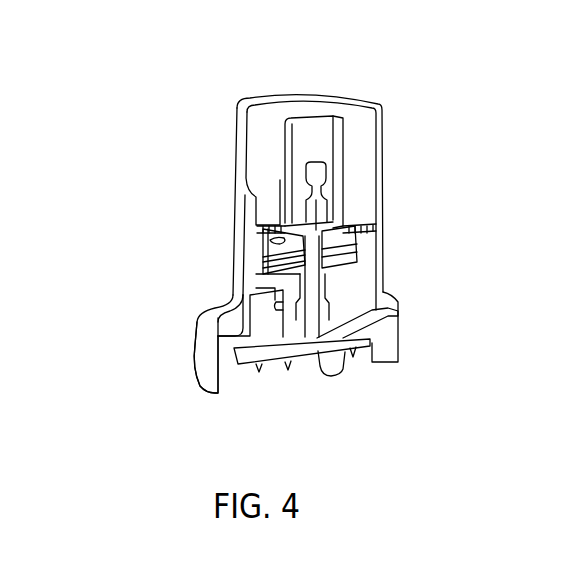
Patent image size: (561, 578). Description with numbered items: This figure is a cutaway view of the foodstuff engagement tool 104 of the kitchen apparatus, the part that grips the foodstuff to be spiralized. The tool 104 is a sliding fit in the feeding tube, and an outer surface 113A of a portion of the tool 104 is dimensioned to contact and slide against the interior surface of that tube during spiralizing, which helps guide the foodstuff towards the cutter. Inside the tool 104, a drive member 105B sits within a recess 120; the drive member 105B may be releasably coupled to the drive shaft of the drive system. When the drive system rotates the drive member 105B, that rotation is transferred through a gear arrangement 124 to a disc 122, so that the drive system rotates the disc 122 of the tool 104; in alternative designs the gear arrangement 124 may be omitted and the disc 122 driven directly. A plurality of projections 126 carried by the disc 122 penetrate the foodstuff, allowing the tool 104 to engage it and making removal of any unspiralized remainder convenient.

The foodstuff engagement tool 104 is at (152, 101).
The recess 120 is at (325, 138).
The drive member 105B is at (320, 177).
The gear arrangement 124 is at (390, 208).
The disc 122 is at (253, 352).
The outer surface 113A is at (202, 373).
The projections 126 is at (343, 370).